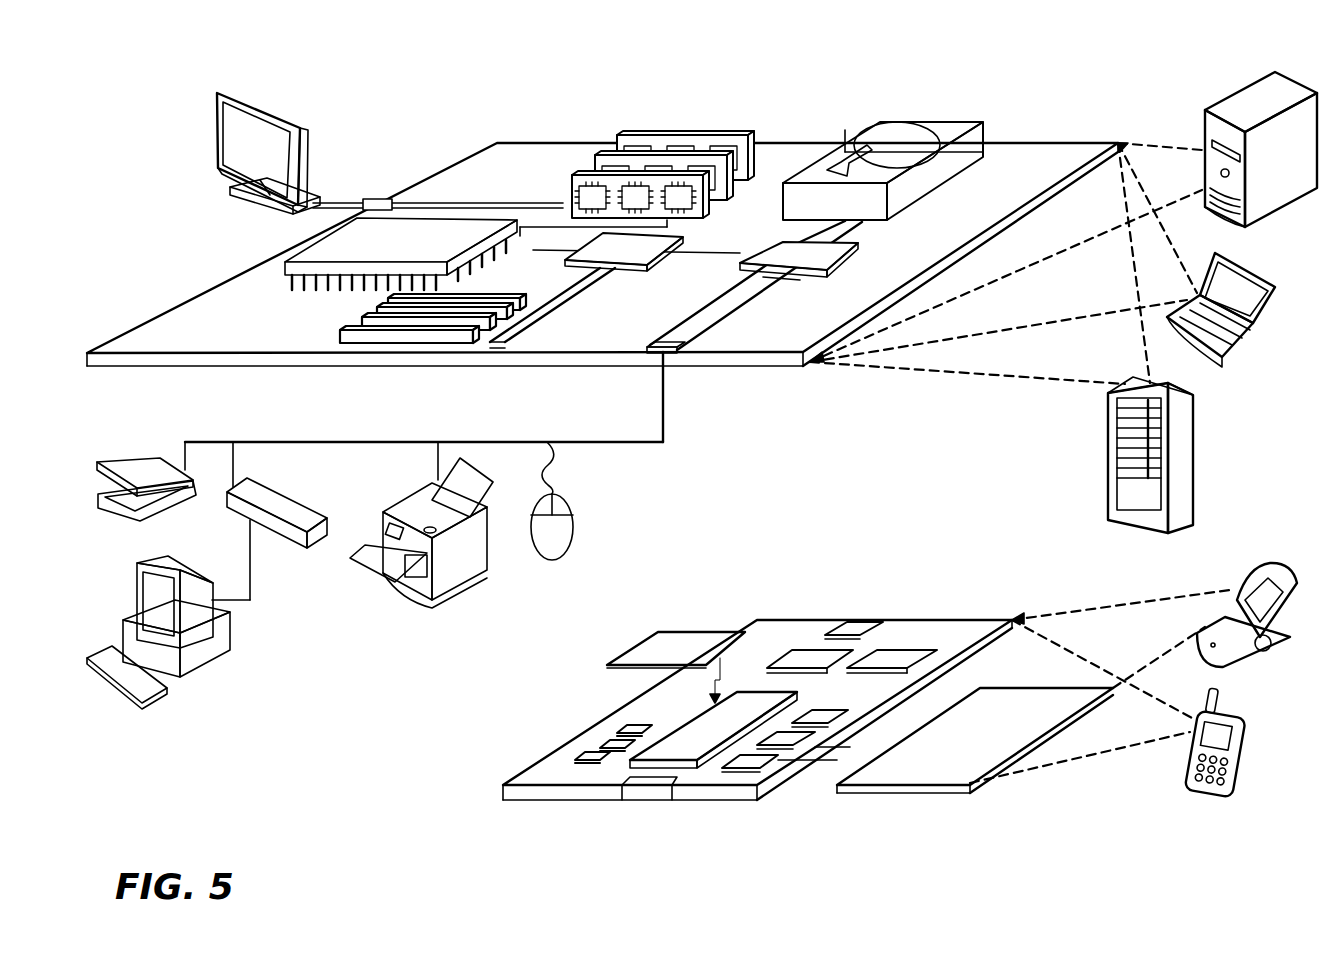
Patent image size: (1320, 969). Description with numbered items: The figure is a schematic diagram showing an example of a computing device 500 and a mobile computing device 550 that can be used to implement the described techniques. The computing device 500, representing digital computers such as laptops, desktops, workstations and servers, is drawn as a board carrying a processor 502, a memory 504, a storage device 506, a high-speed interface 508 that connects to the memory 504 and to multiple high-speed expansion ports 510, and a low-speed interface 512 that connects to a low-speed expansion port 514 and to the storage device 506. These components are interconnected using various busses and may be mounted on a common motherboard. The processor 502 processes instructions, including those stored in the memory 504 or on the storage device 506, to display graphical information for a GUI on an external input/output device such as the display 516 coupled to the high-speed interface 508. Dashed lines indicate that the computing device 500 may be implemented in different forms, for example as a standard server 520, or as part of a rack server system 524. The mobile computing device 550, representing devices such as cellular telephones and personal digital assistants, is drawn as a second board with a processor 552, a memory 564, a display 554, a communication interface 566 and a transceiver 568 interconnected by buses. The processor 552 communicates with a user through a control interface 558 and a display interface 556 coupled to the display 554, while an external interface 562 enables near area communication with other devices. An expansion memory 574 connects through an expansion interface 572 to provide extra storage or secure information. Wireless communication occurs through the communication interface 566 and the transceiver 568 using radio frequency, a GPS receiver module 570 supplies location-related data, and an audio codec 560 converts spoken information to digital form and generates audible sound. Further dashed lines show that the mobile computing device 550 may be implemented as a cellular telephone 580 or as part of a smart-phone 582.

The computing device 500 is at (418, 113).
The processor 502 is at (298, 267).
The memory 504 is at (625, 136).
The storage device 506 is at (880, 125).
The high-speed interface 508 is at (600, 250).
The high-speed expansion ports 510 is at (368, 325).
The low-speed interface 512 is at (783, 247).
The low-speed expansion port 514 is at (677, 354).
The display 516 is at (220, 90).
The standard server 520 is at (1205, 130).
The rack server system 524 is at (1108, 480).
The mobile computing device 550 is at (477, 805).
The processor 552 is at (687, 755).
The display 554 is at (933, 773).
The display interface 556 is at (757, 762).
The control interface 558 is at (797, 738).
The audio codec 560 is at (818, 720).
The external interface 562 is at (652, 790).
The memory 564 is at (590, 748).
The communication interface 566 is at (812, 657).
The transceiver 568 is at (892, 658).
The GPS receiver module 570 is at (863, 622).
The expansion interface 572 is at (737, 632).
The expansion memory 574 is at (655, 633).
The cellular telephone 580 is at (1250, 575).
The smart-phone 582 is at (1190, 747).